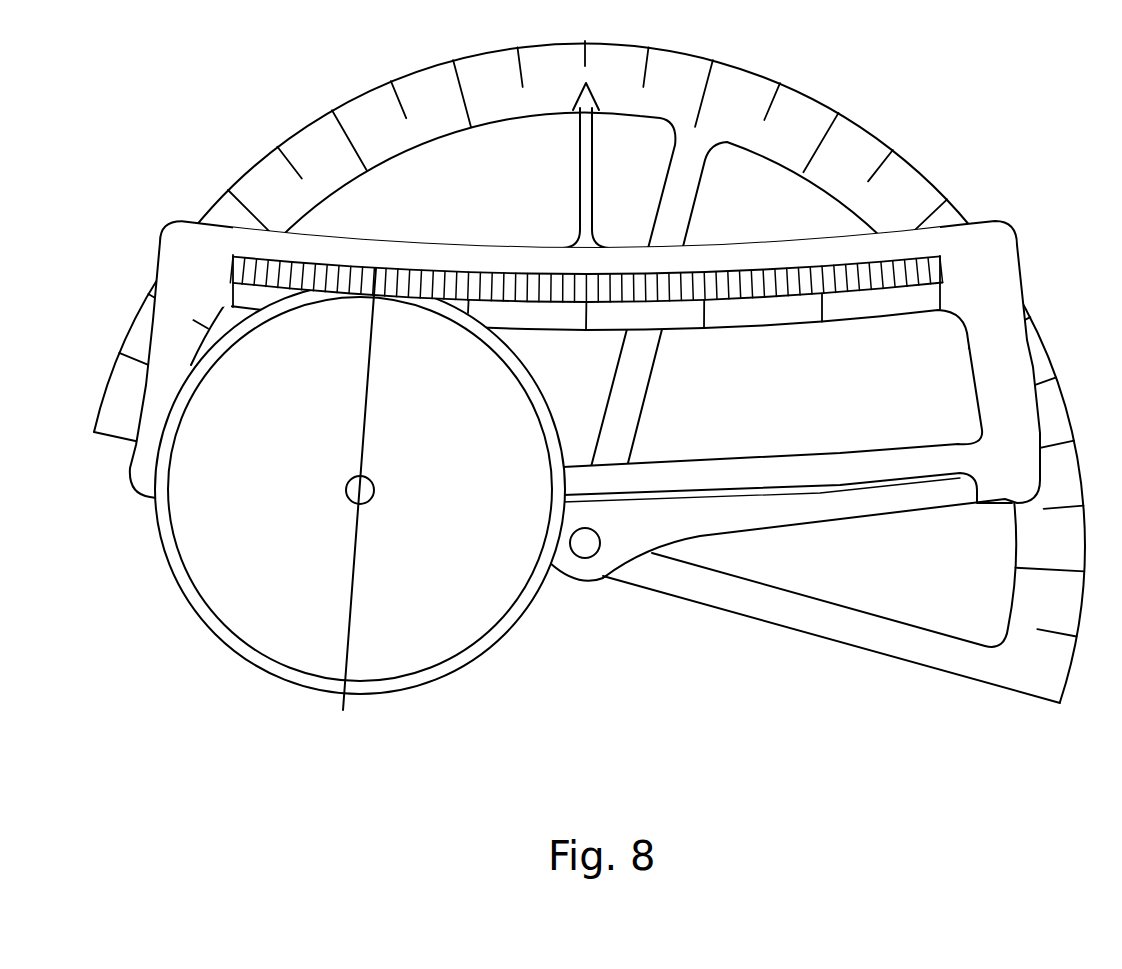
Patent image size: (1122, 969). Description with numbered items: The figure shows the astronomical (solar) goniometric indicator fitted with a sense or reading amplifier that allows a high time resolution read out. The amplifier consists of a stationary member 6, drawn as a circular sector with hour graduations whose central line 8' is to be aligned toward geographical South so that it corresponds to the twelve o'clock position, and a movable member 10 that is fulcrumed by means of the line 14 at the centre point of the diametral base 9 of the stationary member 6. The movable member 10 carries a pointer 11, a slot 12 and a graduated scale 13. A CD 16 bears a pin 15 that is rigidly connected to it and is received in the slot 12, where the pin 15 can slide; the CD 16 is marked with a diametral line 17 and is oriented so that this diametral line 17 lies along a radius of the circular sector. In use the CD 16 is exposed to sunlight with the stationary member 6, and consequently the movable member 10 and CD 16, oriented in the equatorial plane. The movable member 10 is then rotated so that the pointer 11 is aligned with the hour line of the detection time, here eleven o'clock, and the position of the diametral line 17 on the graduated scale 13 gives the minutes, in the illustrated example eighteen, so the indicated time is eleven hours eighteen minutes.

The stationary member 6 is at (589, 427).
The central line 8' is at (601, 363).
The diametral base 9 is at (707, 590).
The movable member 10 is at (1028, 335).
The pointer 11 is at (580, 153).
The slot 12 is at (963, 473).
The graduated scale 13 is at (950, 270).
The line 14 is at (581, 552).
The pin 15 is at (352, 502).
The CD 16 is at (468, 664).
The diametral line 17 is at (368, 397).